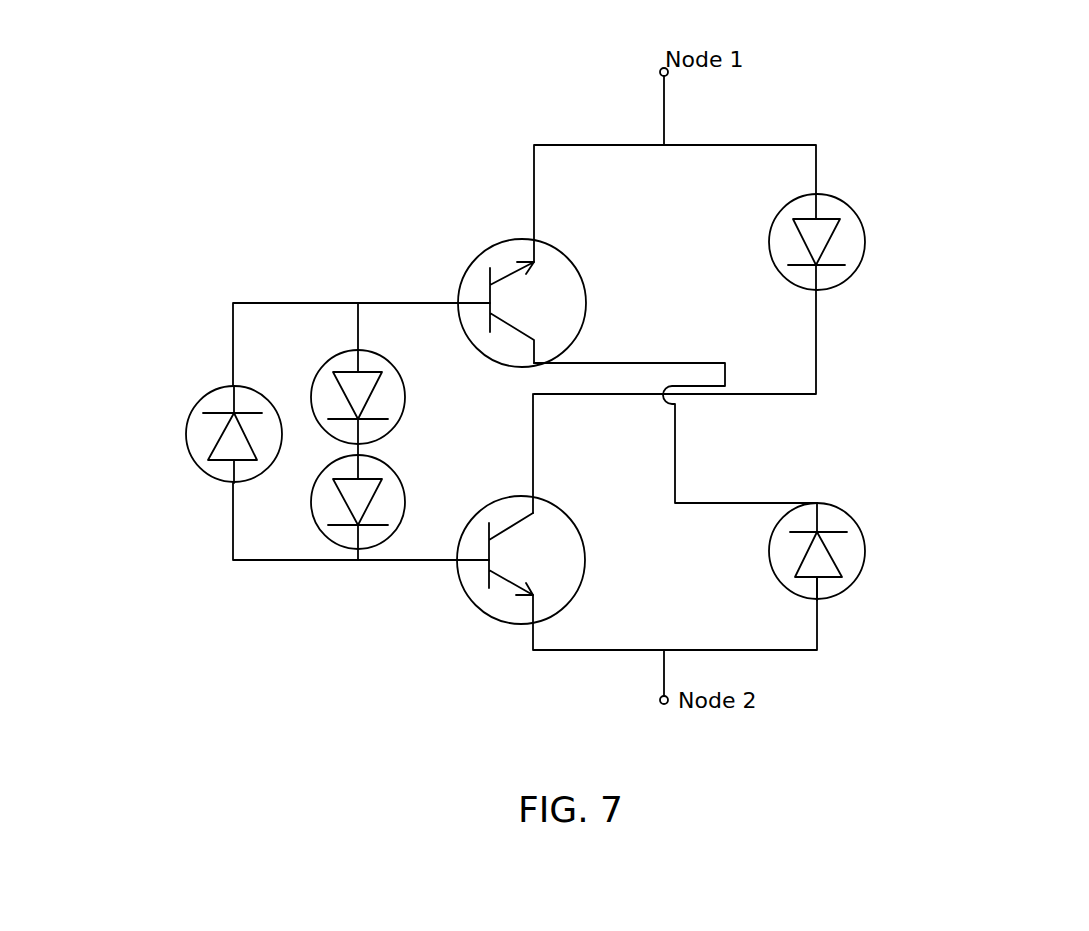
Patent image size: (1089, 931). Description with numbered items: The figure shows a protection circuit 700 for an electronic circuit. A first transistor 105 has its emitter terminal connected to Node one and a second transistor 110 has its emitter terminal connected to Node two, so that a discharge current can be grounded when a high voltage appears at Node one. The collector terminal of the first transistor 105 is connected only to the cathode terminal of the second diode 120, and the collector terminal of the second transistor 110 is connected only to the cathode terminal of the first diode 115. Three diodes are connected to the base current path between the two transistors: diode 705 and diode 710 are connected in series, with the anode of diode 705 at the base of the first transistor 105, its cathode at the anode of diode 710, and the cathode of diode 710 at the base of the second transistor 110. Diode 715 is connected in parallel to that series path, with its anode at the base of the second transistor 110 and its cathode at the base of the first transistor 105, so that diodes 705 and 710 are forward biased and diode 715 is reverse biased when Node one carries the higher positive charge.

The protection circuit 700 is at (973, 163).
The first transistor 105 is at (558, 250).
The second transistor 110 is at (582, 552).
The first diode 115 is at (838, 205).
The second diode 120 is at (850, 518).
The diode 705 is at (406, 398).
The diode 710 is at (406, 515).
The diode 715 is at (185, 435).